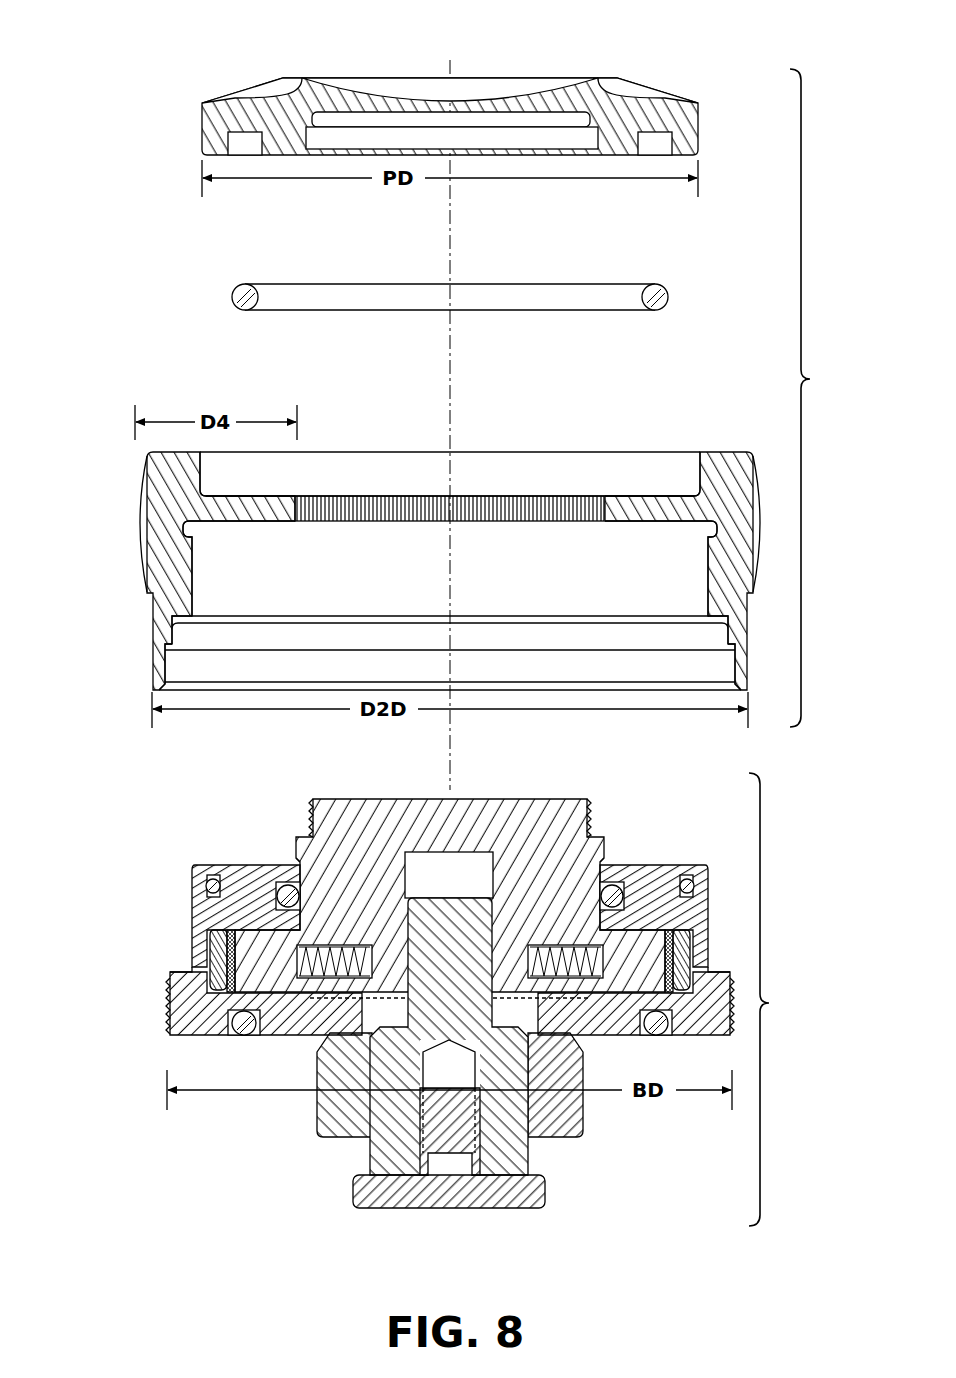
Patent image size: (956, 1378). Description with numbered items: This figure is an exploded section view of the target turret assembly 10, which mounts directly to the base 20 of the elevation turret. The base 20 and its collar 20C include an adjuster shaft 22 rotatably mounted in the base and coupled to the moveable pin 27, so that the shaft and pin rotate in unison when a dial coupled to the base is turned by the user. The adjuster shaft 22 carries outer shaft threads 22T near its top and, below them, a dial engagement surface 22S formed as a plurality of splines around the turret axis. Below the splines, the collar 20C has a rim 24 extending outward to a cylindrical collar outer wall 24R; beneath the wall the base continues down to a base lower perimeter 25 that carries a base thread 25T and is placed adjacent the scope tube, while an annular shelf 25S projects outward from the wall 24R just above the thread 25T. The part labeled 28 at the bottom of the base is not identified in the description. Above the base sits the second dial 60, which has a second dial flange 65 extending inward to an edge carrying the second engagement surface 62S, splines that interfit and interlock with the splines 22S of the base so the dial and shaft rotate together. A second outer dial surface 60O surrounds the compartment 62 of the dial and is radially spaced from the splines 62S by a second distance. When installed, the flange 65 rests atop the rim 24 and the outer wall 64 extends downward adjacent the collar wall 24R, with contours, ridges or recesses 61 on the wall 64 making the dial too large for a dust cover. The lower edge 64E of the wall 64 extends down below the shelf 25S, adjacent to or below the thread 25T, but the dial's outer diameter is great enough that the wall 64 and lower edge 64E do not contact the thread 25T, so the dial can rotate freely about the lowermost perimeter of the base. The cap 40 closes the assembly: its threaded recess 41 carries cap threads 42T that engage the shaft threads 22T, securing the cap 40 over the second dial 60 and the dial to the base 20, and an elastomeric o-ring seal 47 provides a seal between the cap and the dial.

The target turret assembly 10 is at (821, 398).
The base 20 is at (779, 999).
The collar 20C is at (205, 950).
The adjuster shaft 22 is at (466, 868).
The outer shaft threads 22T is at (592, 812).
The dial engagement surface 22S is at (604, 851).
The rim 24 is at (402, 893).
The collar outer wall 24R is at (190, 895).
The base lower perimeter 25 is at (400, 995).
The shelf 25S is at (185, 970).
The base thread 25T is at (170, 1017).
The moveable pin 27 is at (450, 985).
The bottom flange 28 is at (372, 1205).
The cap 40 is at (396, 82).
The threaded recess 41 is at (420, 130).
The cap threads 42T is at (500, 135).
The seal 47 is at (538, 283).
The second dial 60 is at (390, 545).
The second outer dial surface 60O is at (133, 463).
The contours, ridges and/or recesses 61 is at (489, 596).
The compartment 62 is at (489, 489).
The second engagement surface 62S is at (385, 497).
The outer wall 64 is at (153, 628).
The lower edge 64E is at (153, 668).
The second dial flange 65 is at (235, 508).